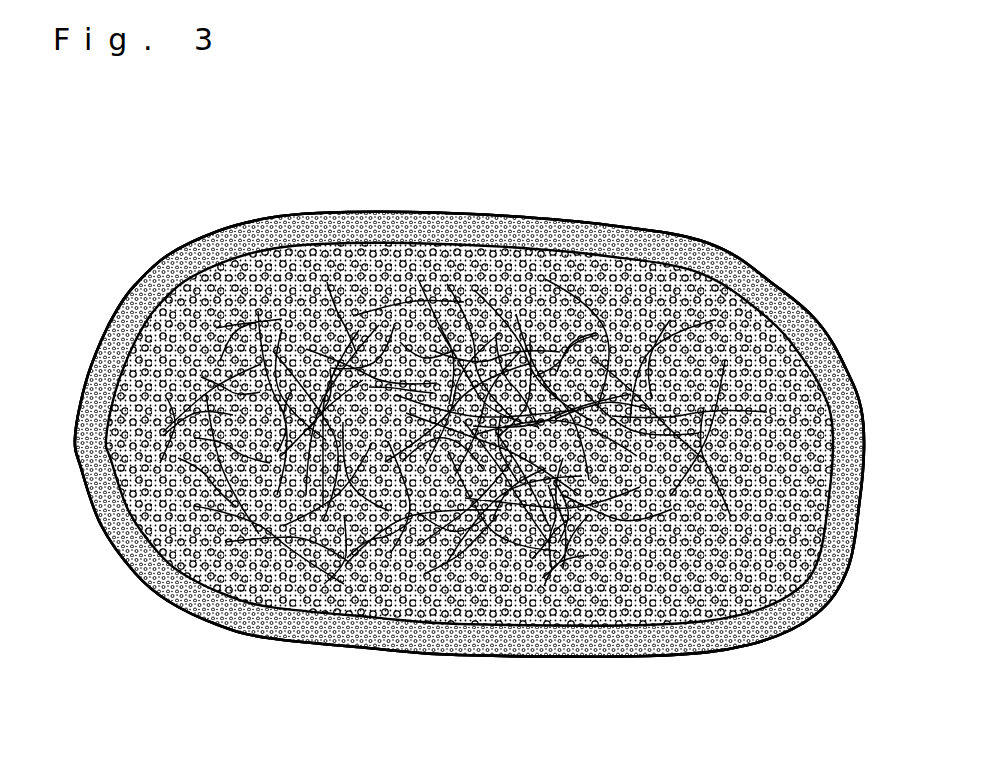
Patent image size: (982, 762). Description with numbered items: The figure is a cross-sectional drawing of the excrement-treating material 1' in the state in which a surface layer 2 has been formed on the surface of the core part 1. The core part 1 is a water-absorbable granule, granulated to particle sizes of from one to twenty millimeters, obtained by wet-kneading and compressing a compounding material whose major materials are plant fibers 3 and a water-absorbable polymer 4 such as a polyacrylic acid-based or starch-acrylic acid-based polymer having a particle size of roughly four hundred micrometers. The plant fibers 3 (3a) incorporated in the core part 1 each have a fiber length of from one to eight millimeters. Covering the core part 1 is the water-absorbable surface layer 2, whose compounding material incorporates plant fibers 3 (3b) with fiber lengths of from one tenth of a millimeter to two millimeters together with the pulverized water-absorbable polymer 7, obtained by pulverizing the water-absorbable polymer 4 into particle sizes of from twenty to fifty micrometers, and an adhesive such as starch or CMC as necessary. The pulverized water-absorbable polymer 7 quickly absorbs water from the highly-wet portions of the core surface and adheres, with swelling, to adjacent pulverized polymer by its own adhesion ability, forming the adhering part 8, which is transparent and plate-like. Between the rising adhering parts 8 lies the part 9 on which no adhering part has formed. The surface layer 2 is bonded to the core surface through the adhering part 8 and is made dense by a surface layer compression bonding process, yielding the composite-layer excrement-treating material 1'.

The core part 1 is at (469, 485).
The excrement-treating material 1' is at (469, 461).
The surface layer 2 is at (212, 223).
The plant fibers 3 is at (471, 437).
The plant fibers of the core part 3a is at (165, 292).
The plant fibers of the surface layer 3b is at (422, 206).
The water-absorbable polymer 4 is at (627, 223).
The pulverized water-absorbable polymer 7 is at (348, 205).
The adhering part 8 is at (562, 210).
The part on which the adhering part has not been formed 9 is at (327, 230).